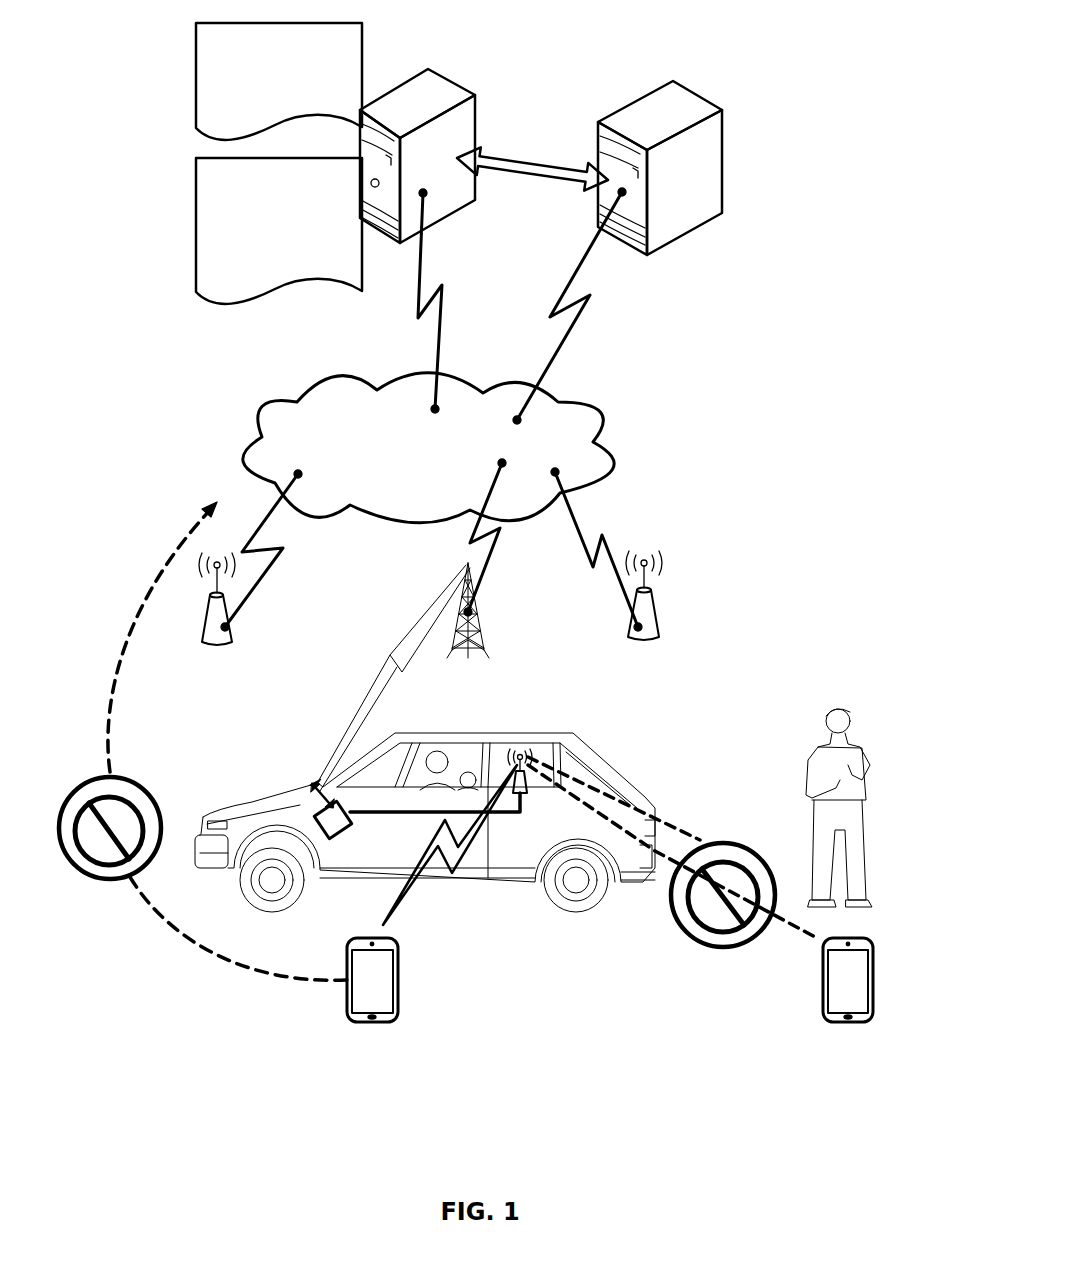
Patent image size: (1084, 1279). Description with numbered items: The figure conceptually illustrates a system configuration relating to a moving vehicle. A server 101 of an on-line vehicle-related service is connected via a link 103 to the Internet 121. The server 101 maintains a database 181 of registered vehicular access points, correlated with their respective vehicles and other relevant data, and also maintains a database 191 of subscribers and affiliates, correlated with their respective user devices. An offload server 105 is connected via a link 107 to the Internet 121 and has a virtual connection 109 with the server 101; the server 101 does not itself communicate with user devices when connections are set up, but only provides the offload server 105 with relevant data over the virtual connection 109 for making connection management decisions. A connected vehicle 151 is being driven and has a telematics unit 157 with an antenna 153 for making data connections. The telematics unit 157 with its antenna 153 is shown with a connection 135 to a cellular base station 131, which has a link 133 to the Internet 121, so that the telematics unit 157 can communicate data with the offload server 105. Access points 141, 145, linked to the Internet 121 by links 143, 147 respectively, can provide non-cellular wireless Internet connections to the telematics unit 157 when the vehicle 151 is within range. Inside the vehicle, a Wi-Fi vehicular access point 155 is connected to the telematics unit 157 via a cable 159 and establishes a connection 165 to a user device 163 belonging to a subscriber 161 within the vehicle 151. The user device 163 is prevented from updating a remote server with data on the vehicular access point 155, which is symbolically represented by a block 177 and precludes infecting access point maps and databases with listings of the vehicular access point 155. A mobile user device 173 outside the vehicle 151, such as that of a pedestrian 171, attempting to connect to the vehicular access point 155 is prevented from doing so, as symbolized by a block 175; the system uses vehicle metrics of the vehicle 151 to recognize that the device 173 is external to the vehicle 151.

The server 101 is at (413, 103).
The link 103 is at (437, 348).
The offload server 105 is at (685, 183).
The link 107 is at (557, 358).
The virtual connection 109 is at (532, 170).
The Internet 121 is at (410, 462).
The cellular base station 131 is at (482, 640).
The link 133 is at (485, 578).
The connection 135 is at (397, 650).
The access point 141 is at (215, 620).
The link 143 is at (270, 512).
The access point 145 is at (643, 615).
The link 147 is at (575, 515).
The connected vehicle 151 is at (590, 753).
The antenna 153 is at (327, 755).
The Wi-Fi vehicular access point 155 is at (527, 783).
The telematics unit 157 is at (333, 830).
The cable 159 is at (372, 813).
The subscriber 161 is at (442, 767).
The user device 163 is at (400, 982).
The connection 165 is at (460, 862).
The pedestrian 171 is at (817, 752).
The mobile user device 173 is at (857, 755).
The block 175 is at (752, 845).
The block 177 is at (137, 780).
The database 181 is at (210, 62).
The database 191 is at (210, 201).